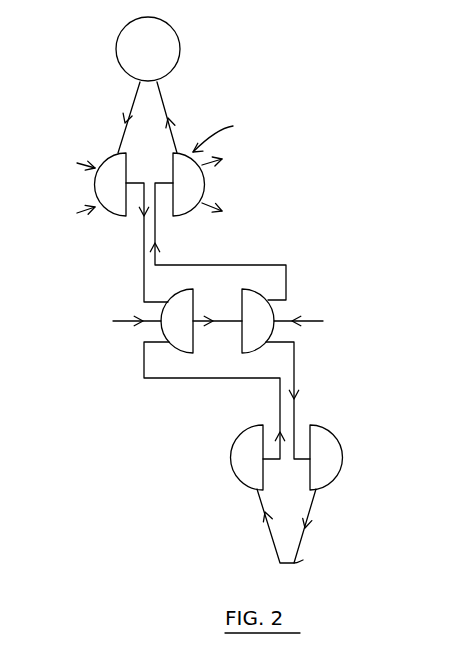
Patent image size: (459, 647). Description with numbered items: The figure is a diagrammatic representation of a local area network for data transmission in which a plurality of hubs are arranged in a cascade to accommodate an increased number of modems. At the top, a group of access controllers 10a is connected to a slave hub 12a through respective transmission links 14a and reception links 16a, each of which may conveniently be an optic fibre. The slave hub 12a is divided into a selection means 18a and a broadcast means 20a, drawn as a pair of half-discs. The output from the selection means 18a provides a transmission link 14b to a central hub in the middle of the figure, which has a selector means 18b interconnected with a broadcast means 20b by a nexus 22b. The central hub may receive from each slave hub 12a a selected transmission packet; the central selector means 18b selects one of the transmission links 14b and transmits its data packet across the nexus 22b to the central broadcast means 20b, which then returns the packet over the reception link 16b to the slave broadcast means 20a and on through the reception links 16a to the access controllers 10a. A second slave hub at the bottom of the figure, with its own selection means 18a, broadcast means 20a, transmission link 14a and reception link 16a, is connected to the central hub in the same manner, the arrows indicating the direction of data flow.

The access controller 10a is at (170, 47).
The slave hub 12a is at (233, 126).
The transmission link 14a is at (122, 127).
The reception link 16a is at (167, 107).
The selection means 18a is at (103, 185).
The broadcast means 20a is at (200, 185).
The transmission link 14b is at (144, 268).
The reception link 16b is at (203, 262).
The selector means 18b is at (173, 327).
The broadcast means 20b is at (263, 308).
The nexus 22b is at (220, 315).